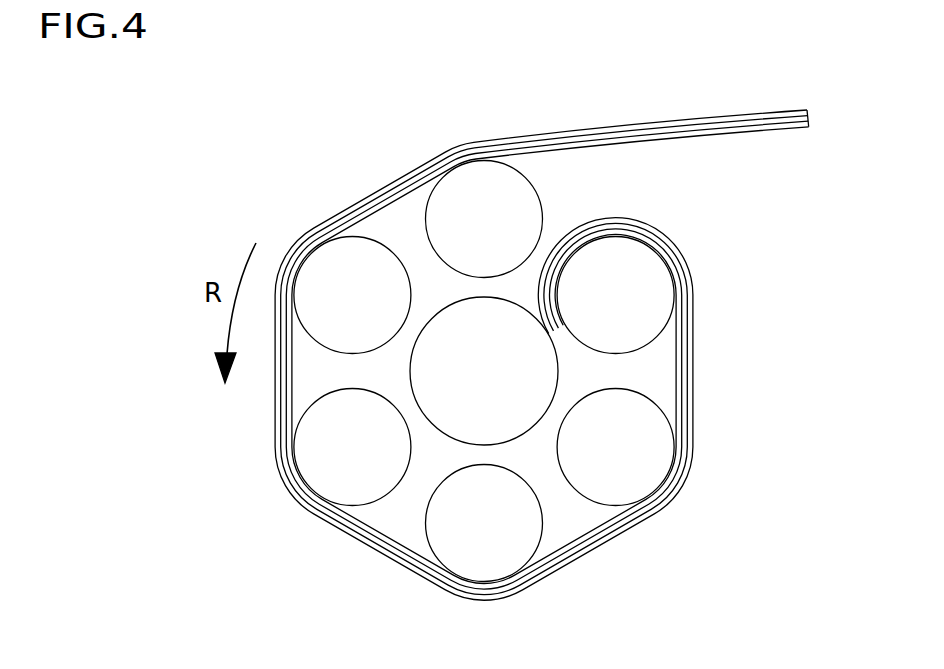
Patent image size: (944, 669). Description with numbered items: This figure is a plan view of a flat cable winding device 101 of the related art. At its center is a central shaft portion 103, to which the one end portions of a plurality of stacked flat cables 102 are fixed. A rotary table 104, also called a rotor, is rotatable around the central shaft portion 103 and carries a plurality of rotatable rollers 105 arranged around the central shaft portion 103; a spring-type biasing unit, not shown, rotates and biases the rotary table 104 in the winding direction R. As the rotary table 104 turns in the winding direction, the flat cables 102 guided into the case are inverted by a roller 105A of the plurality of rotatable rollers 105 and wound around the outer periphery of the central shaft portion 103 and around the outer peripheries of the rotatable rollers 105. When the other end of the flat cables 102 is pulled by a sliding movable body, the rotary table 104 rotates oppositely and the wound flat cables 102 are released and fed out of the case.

The flat cable winding device 101 is at (508, 371).
The flat cables 102 is at (422, 178).
The central shaft portion 103 is at (523, 433).
The rotary table 104 is at (542, 345).
The rotatable rollers 105 is at (508, 398).
The roller 105A is at (650, 275).